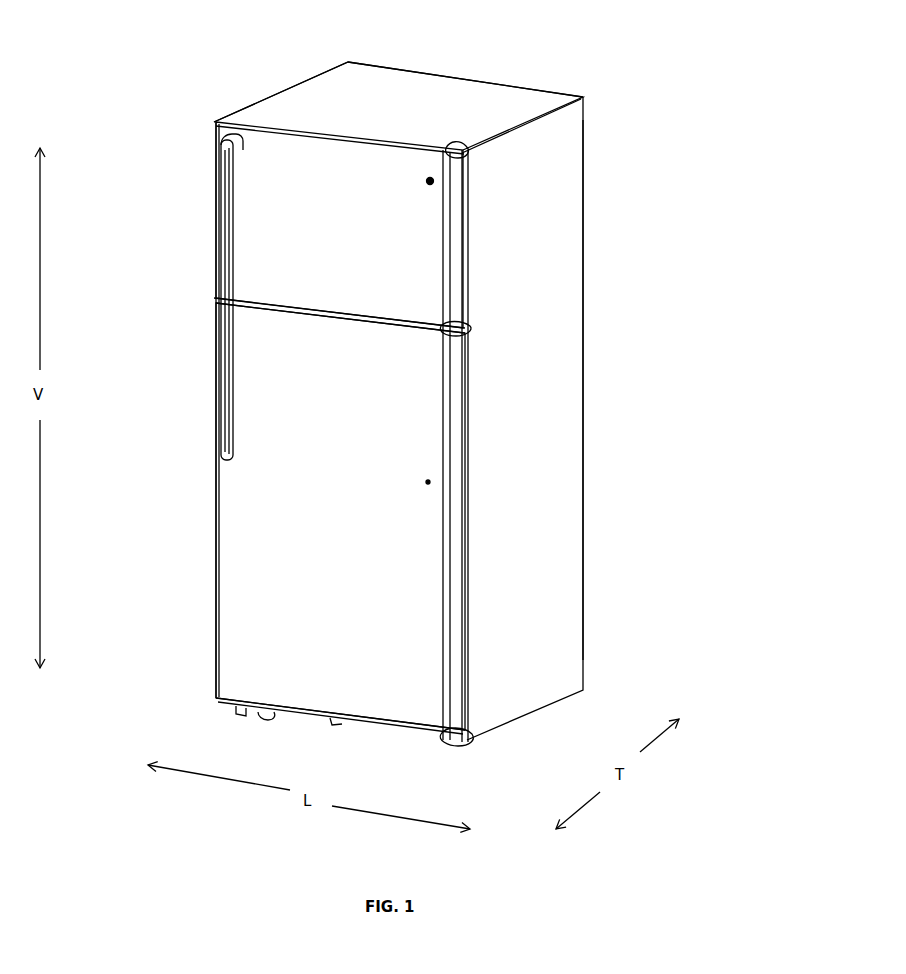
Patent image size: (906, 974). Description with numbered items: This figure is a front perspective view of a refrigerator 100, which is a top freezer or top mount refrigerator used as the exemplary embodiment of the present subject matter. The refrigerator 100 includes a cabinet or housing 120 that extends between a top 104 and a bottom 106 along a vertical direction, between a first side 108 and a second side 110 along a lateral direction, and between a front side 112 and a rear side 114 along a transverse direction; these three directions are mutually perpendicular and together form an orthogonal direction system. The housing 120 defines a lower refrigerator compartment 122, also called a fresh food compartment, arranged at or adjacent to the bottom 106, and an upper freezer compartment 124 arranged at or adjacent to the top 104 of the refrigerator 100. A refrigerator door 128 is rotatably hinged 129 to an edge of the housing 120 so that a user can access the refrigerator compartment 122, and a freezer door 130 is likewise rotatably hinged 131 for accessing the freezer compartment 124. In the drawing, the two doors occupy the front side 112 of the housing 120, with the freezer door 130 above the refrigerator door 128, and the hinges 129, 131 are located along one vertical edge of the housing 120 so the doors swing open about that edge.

The refrigerator 100 is at (726, 143).
The top 104 is at (515, 104).
The bottom 106 is at (398, 732).
The first side 108 is at (524, 441).
The second side 110 is at (327, 72).
The front side 112 is at (203, 672).
The rear side 114 is at (452, 76).
The cabinet or housing 120 is at (584, 250).
The lower refrigerator compartment 122 is at (215, 522).
The upper freezer compartment 124 is at (213, 237).
The refrigerator door 128 is at (247, 588).
The hinge 129 is at (467, 331).
The freezer door 130 is at (240, 130).
The hinge 131 is at (478, 157).